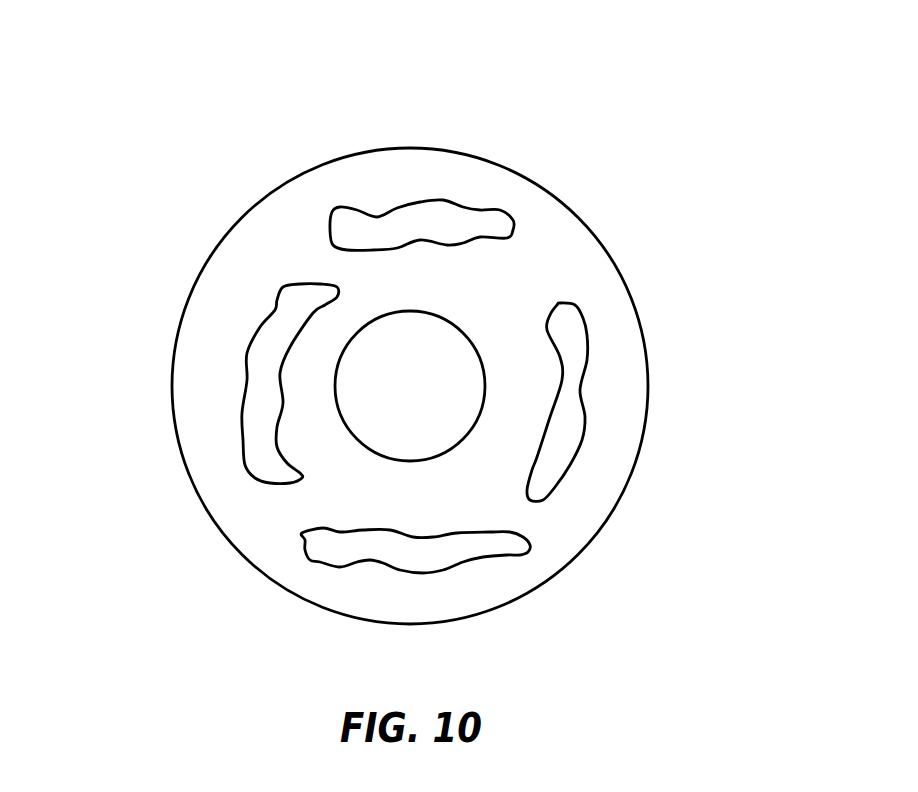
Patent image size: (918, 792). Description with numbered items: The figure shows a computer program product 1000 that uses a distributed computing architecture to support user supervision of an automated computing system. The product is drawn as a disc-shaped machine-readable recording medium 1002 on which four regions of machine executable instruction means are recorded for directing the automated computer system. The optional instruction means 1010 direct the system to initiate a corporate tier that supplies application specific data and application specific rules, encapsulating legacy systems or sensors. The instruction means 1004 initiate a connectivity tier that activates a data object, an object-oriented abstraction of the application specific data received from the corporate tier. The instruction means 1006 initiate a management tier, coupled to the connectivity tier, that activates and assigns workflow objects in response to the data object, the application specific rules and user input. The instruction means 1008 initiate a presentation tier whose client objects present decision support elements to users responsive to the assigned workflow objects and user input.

The computer program product 1000 is at (564, 59).
The machine-readable recording medium 1002 is at (596, 232).
The instruction means 1004 is at (243, 418).
The instruction means 1006 is at (528, 550).
The instruction means 1008 is at (582, 388).
The optional instruction means 1010 is at (502, 209).